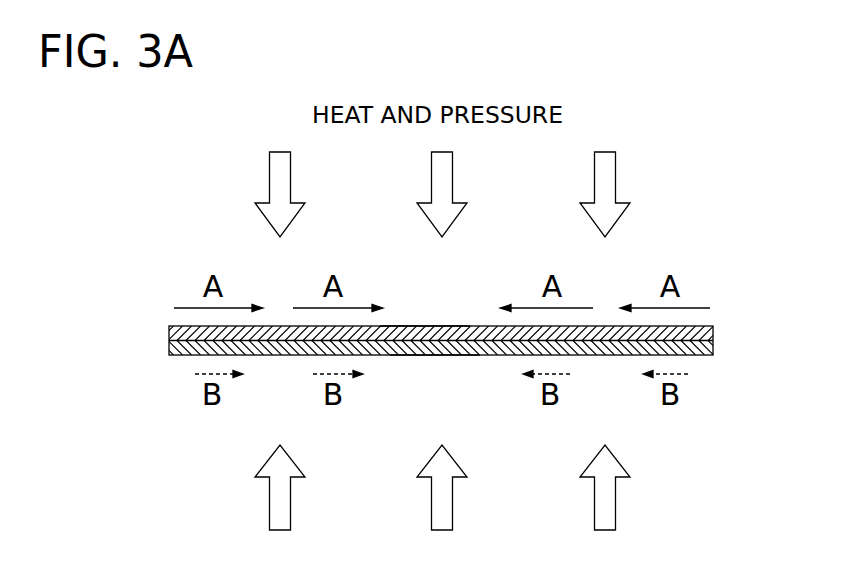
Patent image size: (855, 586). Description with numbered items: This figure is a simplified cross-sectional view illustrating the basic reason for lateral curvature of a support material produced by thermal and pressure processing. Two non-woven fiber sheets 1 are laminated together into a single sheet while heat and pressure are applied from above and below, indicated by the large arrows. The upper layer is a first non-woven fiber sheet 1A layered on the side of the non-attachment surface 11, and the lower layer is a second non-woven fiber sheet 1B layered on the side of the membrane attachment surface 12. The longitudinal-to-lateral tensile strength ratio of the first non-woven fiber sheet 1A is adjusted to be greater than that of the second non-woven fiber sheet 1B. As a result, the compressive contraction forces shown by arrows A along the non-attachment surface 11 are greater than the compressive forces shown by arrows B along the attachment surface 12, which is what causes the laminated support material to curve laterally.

The non-woven fiber sheets 1 is at (486, 341).
The first non-woven fiber sheet 1A is at (603, 326).
The second non-woven fiber sheet 1B is at (627, 355).
The non-attachment surface 11 is at (425, 326).
The attachment surface 12 is at (433, 356).